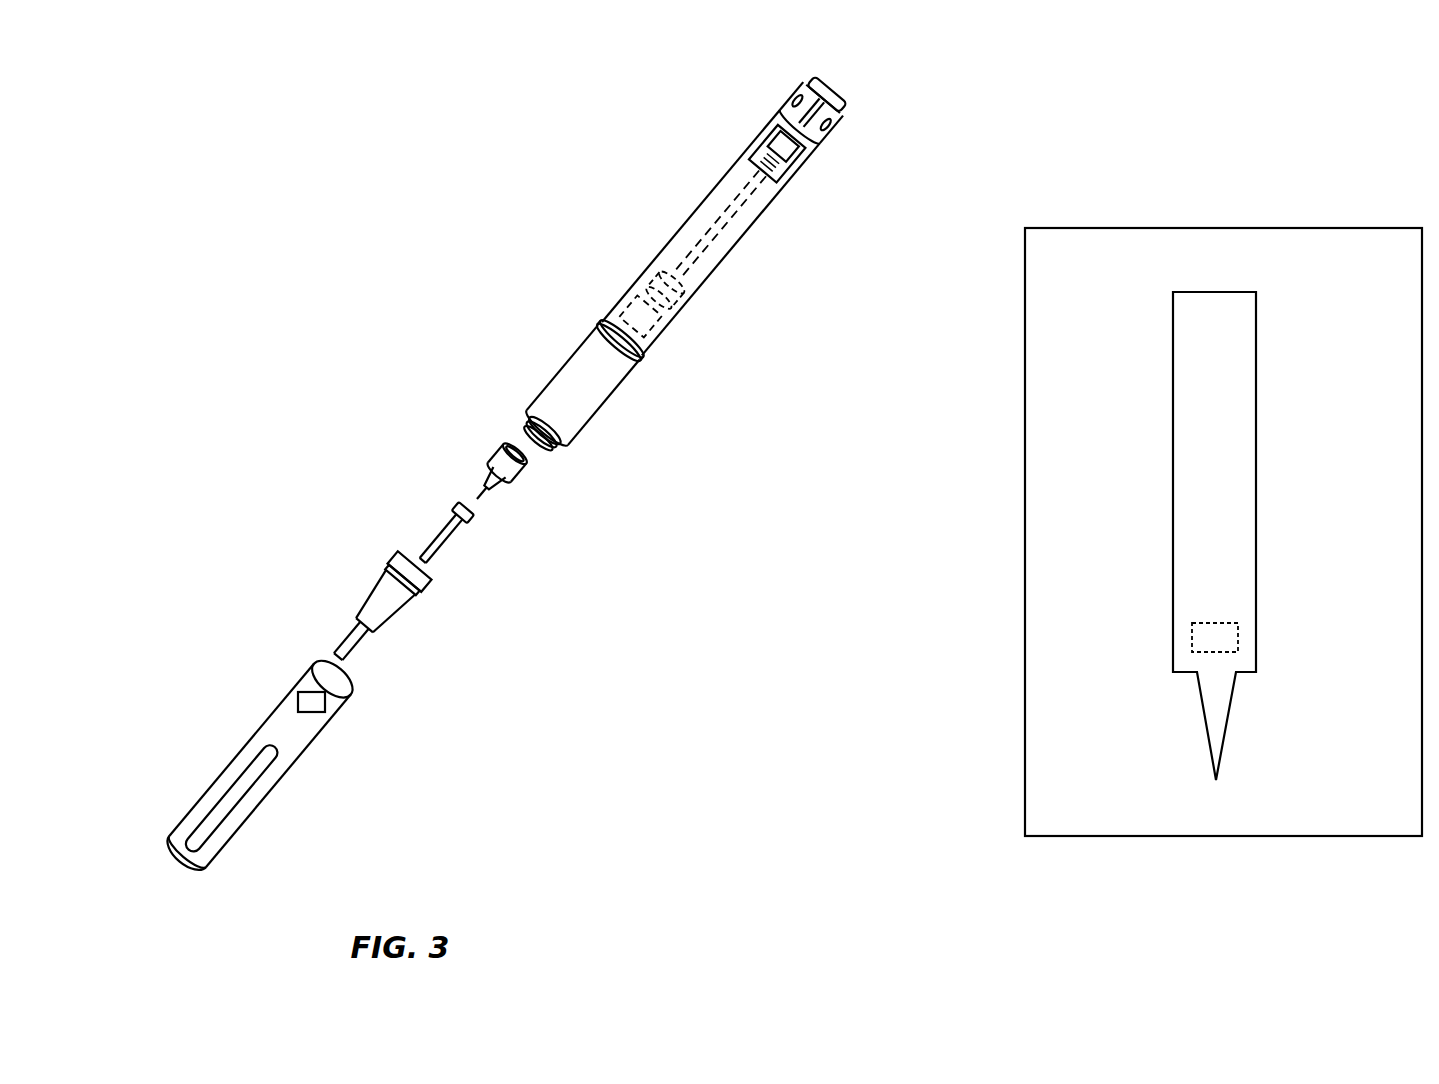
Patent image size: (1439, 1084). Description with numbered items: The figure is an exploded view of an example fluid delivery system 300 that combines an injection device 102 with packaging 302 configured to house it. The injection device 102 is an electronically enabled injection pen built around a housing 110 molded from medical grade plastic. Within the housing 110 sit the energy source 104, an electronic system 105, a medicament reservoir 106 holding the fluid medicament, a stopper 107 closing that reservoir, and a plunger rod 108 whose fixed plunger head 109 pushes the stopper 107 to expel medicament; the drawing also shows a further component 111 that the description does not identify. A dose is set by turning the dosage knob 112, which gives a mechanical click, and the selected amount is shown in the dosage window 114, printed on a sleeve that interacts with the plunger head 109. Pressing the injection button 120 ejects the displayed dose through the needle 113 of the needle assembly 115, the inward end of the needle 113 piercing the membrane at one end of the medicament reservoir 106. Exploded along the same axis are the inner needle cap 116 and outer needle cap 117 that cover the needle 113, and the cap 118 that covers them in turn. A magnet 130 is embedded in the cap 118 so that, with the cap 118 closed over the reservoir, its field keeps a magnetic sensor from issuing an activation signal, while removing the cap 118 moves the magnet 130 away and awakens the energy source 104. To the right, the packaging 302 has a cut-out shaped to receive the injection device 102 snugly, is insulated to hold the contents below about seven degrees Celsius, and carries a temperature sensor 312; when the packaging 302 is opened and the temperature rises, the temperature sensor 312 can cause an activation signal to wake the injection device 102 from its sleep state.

The fluid delivery system 300 is at (328, 178).
The injection device 102 is at (683, 266).
The energy source 104 is at (711, 233).
The electronic system 105 is at (640, 316).
The medicament reservoir 106 is at (576, 392).
The stopper 107 is at (620, 340).
The plunger rod 108 is at (721, 222).
The plunger head 109 is at (671, 282).
The housing 110 is at (724, 219).
The piston rod 111 is at (663, 292).
The dosage knob 112 is at (811, 112).
The needle 113 is at (477, 498).
The dosage window 114 is at (777, 154).
The needle assembly 115 is at (508, 457).
The inner needle cap 116 is at (452, 533).
The outer needle cap 117 is at (377, 607).
The cap 118 is at (203, 807).
The injection button 120 is at (827, 94).
The magnet 130 is at (298, 702).
The packaging 302 is at (1025, 263).
The temperature sensor 312 is at (1192, 632).